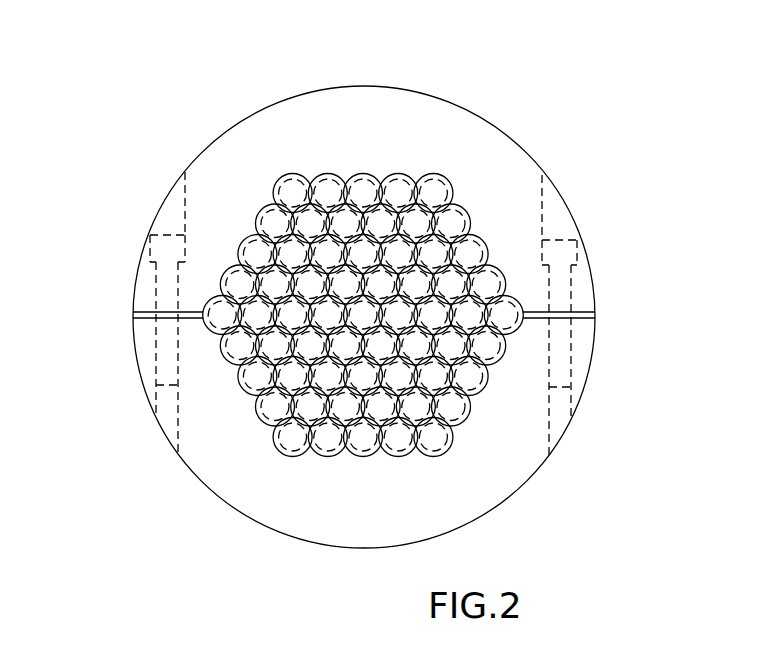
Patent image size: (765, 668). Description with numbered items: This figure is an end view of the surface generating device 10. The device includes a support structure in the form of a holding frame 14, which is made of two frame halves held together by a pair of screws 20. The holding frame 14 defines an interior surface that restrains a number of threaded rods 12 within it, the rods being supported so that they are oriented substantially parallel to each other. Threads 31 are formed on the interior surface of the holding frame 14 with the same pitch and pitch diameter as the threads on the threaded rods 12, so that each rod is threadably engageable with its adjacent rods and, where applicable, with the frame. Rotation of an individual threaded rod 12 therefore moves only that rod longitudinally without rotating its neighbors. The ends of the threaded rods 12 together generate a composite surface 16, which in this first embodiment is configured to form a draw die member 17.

The surface generating device 10 is at (430, 88).
The threaded rods 12 is at (365, 180).
The holding frame 14 is at (213, 178).
The composite surface 16 is at (418, 403).
The draw die member 17 is at (260, 404).
The screws 20 is at (158, 252).
The threads 31 is at (450, 187).